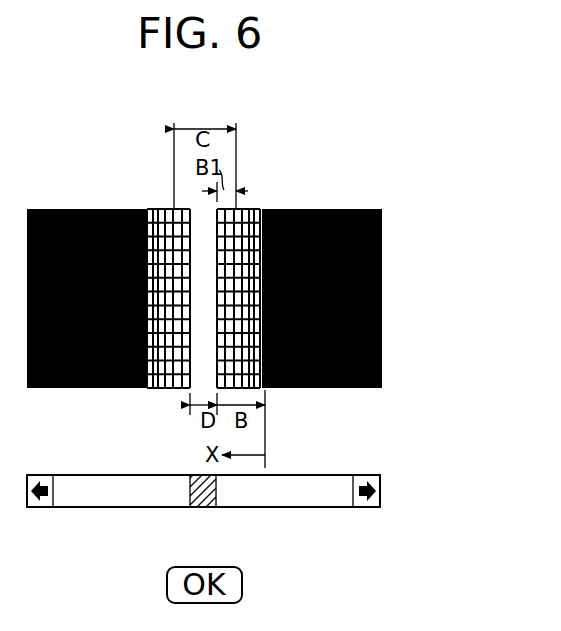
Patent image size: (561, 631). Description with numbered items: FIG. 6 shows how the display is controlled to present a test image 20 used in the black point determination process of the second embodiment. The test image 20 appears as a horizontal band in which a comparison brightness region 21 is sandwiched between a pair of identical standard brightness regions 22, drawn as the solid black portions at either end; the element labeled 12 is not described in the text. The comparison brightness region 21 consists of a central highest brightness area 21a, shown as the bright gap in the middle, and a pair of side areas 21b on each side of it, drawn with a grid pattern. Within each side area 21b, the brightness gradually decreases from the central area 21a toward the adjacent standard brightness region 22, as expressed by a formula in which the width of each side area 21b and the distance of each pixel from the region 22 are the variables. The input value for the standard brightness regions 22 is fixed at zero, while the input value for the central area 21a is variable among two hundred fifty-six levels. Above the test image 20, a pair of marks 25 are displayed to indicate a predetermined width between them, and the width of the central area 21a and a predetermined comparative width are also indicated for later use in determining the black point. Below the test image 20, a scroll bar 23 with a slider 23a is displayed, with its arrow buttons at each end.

The first light-shielding layer 12 is at (84, 208).
The test image 20 is at (255, 255).
The comparison brightness region 21 is at (196, 255).
The central highest brightness area 21a is at (203, 388).
The side area 21b is at (167, 389).
The standard brightness region 22 is at (343, 209).
The scroll bar 23 is at (203, 515).
The slider 23a is at (202, 500).
The mark 25 is at (168, 177).